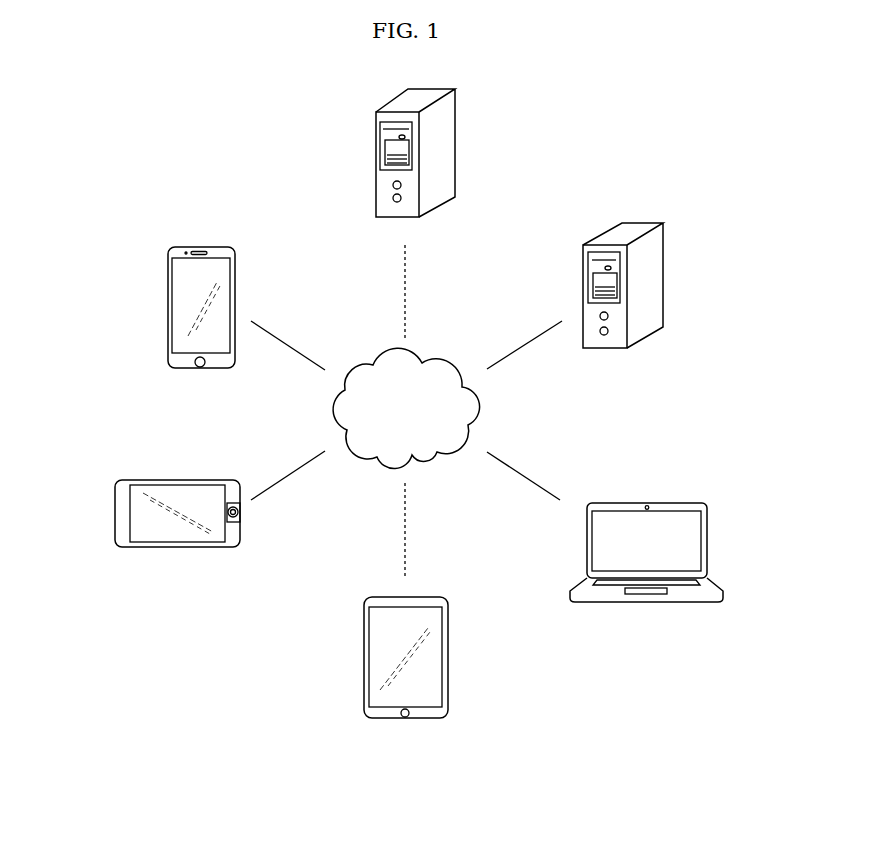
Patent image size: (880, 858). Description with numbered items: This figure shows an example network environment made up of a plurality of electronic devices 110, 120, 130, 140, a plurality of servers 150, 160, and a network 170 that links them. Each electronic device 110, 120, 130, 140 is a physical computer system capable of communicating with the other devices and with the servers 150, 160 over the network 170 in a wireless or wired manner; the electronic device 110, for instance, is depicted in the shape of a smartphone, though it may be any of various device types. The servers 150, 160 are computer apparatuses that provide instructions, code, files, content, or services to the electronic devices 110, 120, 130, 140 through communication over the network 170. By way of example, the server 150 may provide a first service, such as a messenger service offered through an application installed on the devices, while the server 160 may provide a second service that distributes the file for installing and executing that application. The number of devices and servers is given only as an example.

The electronic device 110 is at (168, 307).
The electronic device 120 is at (115, 510).
The electronic device 130 is at (448, 658).
The electronic device 140 is at (707, 543).
The server 150 is at (665, 273).
The server 160 is at (455, 142).
The network 170 is at (427, 360).